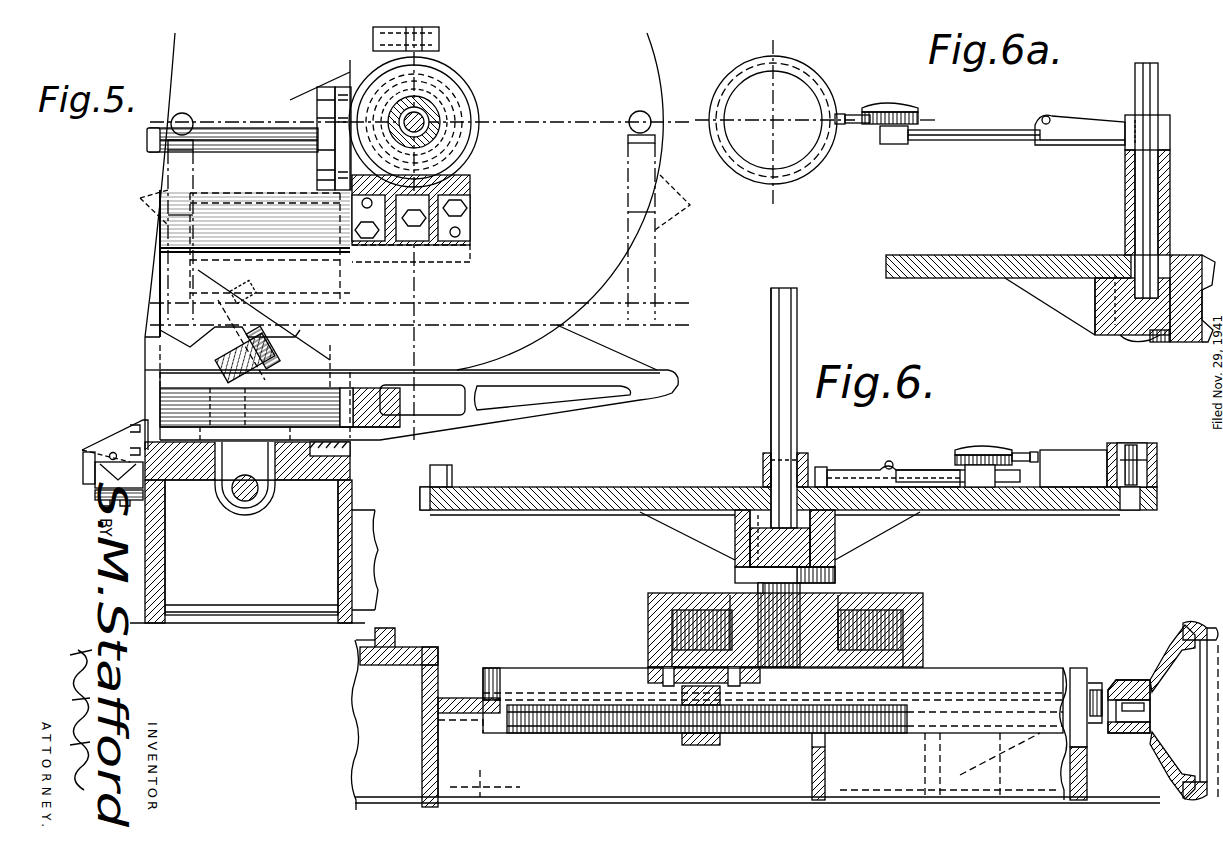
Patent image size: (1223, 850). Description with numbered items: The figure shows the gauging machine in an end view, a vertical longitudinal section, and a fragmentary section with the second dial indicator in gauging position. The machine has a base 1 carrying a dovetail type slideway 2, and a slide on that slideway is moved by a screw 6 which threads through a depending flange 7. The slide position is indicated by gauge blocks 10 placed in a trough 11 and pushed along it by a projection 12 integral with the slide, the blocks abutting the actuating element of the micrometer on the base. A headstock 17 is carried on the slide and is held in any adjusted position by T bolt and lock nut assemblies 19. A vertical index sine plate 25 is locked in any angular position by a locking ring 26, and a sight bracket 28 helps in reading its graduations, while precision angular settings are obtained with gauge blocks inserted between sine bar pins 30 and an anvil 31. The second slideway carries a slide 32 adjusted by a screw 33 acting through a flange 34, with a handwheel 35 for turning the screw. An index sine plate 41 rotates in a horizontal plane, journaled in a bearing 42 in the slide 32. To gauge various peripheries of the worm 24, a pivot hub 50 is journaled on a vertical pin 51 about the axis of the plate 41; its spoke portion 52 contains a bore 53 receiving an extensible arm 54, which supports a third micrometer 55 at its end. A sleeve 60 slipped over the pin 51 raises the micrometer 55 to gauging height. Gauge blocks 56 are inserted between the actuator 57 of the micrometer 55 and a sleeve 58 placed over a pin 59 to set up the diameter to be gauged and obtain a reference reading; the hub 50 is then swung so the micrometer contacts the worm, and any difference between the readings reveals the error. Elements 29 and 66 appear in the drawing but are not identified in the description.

In FIG. 5, the base 1 is at (298, 574).
In FIG. 6, the base 1 is at (528, 769).
In FIG. 5, the slideway 2 is at (188, 462).
In FIG. 6, the slideway 2 is at (398, 640).
In FIG. 5, the screw 6 is at (222, 506).
In FIG. 5, the flange 7 is at (256, 503).
In FIG. 5, the gauge blocks 10 is at (90, 462).
In FIG. 5, the trough 11 is at (92, 488).
In FIG. 5, the projection 12 is at (112, 440).
In FIG. 5, the headstock 17 is at (300, 100).
In FIG. 5, the T bolt and lock nut assemblies 19 is at (282, 346).
In FIG. 6A, the worm 24 is at (810, 162).
In FIG. 5, the vertical index sine plate 25 is at (572, 75).
In FIG. 5, the locking ring 26 is at (372, 66).
In FIG. 5, the sight bracket 28 is at (152, 148).
In FIG. 5, the guide posts 29 is at (413, 202).
In FIG. 5, the sine bar pins 30 is at (184, 113).
In FIG. 5, the anvil 31 is at (419, 405).
In FIG. 6, the slide 32 is at (648, 613).
In FIG. 6, the screw 33 is at (640, 734).
In FIG. 6, the flange 34 is at (722, 744).
In FIG. 6, the handwheel 35 is at (1188, 624).
In FIG. 6A, the index sine plate 41 is at (1003, 255).
In FIG. 6, the index sine plate 41 is at (608, 486).
In FIG. 6, the bearing 42 is at (734, 584).
In FIG. 6A, the pivot hub 50 is at (1125, 114).
In FIG. 6, the pivot hub 50 is at (762, 465).
In FIG. 6A, the vertical pin 51 is at (1160, 82).
In FIG. 6, the vertical pin 51 is at (788, 286).
In FIG. 6A, the spoke portion 52 is at (1050, 146).
In FIG. 6, the spoke portion 52 is at (852, 466).
In FIG. 6, the bore 53 is at (822, 466).
In FIG. 6A, the extensible arm 54 is at (965, 144).
In FIG. 6, the extensible arm 54 is at (928, 468).
In FIG. 6A, the third micrometer 55 is at (896, 104).
In FIG. 6, the third micrometer 55 is at (992, 446).
In FIG. 6, the gauge blocks 56 is at (1064, 450).
In FIG. 6A, the actuator 57 is at (843, 113).
In FIG. 6, the actuator 57 is at (1030, 452).
In FIG. 6, the sleeve 58 is at (1158, 468).
In FIG. 6, the pin 59 is at (1131, 444).
In FIG. 6A, the sleeve 60 is at (1124, 196).
In FIG. 6, the stop 66 is at (455, 472).